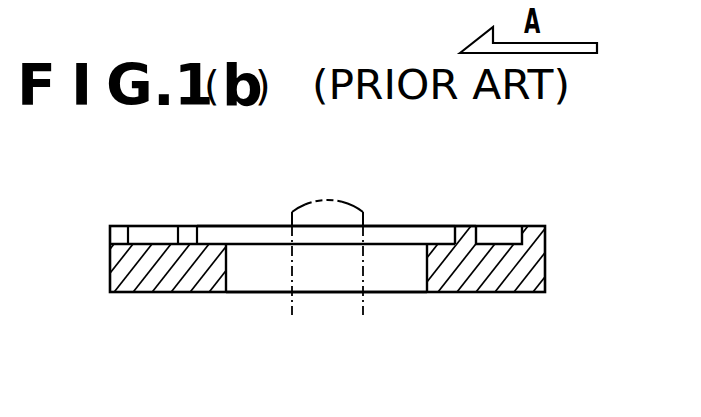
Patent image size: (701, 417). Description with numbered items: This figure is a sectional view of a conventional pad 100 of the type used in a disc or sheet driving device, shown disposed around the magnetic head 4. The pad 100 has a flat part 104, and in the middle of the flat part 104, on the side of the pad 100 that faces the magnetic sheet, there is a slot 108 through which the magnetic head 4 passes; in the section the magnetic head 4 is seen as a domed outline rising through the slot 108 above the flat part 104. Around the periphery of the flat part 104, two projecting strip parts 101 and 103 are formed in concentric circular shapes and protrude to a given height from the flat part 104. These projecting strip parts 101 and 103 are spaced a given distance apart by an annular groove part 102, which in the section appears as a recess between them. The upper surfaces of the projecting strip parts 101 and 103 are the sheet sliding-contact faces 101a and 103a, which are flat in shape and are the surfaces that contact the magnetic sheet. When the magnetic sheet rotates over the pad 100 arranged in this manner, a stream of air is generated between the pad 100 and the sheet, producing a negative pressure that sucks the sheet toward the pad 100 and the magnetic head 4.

The pad 100 is at (510, 303).
The projecting strip part 101 is at (533, 232).
The sheet sliding-contact face 101a is at (117, 224).
The annular groove part 102 is at (497, 238).
The projecting strip part 103 is at (467, 233).
The sheet sliding-contact face 103a is at (187, 224).
The flat part 104 is at (212, 244).
The slot 108 is at (392, 278).
The magnetic head 4 is at (333, 211).